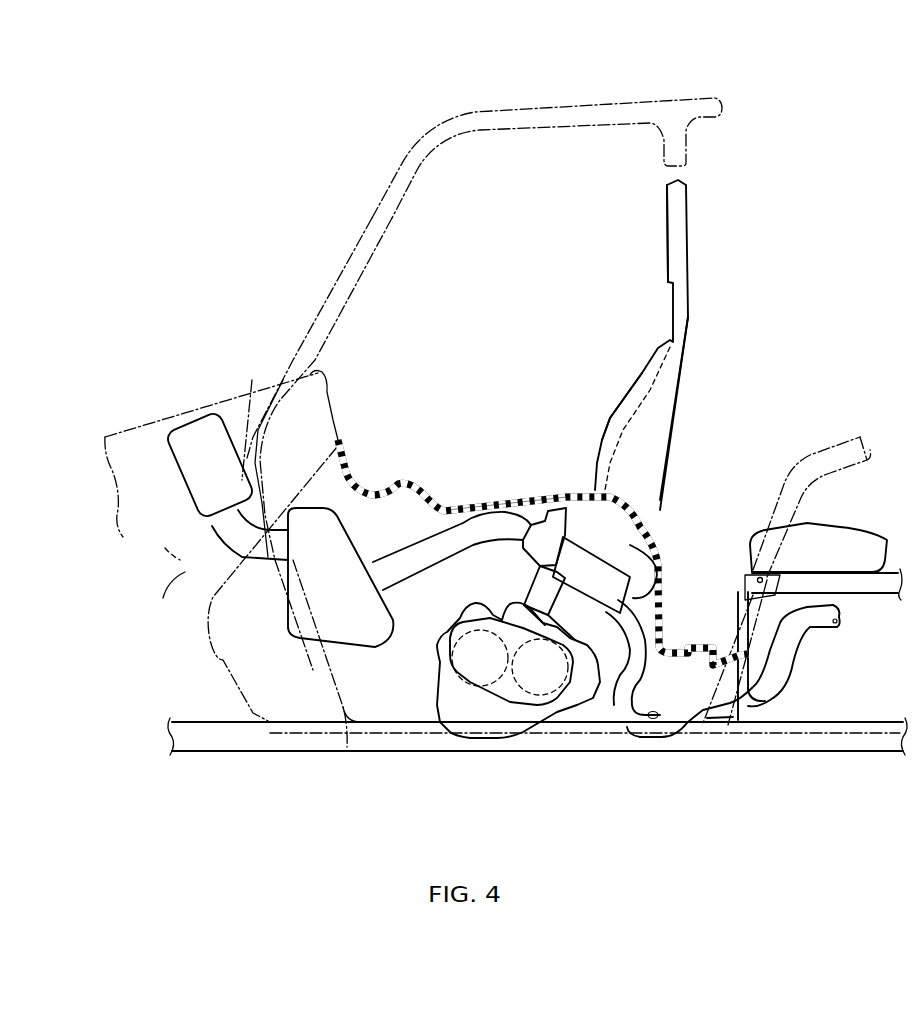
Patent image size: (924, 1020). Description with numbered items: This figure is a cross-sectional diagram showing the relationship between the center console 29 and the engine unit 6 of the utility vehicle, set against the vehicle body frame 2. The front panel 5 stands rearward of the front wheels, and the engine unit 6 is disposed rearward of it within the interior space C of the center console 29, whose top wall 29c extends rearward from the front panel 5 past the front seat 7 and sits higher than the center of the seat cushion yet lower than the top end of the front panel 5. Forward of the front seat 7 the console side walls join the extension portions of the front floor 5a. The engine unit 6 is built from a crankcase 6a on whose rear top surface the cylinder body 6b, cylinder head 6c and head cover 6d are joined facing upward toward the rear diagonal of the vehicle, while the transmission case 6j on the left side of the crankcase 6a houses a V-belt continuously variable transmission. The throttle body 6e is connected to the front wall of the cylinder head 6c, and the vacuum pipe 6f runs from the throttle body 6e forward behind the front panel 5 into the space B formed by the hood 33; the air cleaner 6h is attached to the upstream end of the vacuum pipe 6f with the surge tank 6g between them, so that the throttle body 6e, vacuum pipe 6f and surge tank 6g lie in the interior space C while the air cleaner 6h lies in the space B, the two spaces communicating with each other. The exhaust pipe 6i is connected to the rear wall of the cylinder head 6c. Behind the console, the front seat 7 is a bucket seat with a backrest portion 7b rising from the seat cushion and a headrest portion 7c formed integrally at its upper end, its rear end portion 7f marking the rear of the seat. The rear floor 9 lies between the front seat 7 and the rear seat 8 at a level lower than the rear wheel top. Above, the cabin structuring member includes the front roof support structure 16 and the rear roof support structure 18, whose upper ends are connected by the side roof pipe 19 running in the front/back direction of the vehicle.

The vehicle body frame 2 is at (320, 757).
The front panel 5 is at (230, 660).
The front floor 5a is at (383, 735).
The engine unit 6 is at (433, 613).
The crankcase 6a is at (460, 720).
The cylinder body 6b is at (548, 597).
The cylinder head 6c is at (645, 597).
The head cover 6d is at (627, 560).
The throttle body 6e is at (548, 517).
The vacuum pipe 6f is at (405, 547).
The surge tank 6g is at (345, 518).
The air cleaner 6h is at (178, 490).
The exhaust pipe 6i is at (640, 683).
The transmission case 6j is at (510, 708).
The front seat 7 is at (641, 368).
The backrest portion 7b is at (611, 416).
The headrest portion 7c is at (667, 228).
The rear end portion of the front seat 7f is at (688, 315).
The rear seat 8 is at (848, 527).
The rear floor 9 is at (660, 718).
The front roof support structure 16 is at (345, 248).
The rear roof support structure 18 is at (826, 447).
The side roof pipe 19 is at (603, 100).
The center console 29 is at (473, 497).
The top wall 29c is at (500, 497).
The hood 33 is at (163, 418).
The space B is at (163, 598).
The interior space C is at (457, 577).